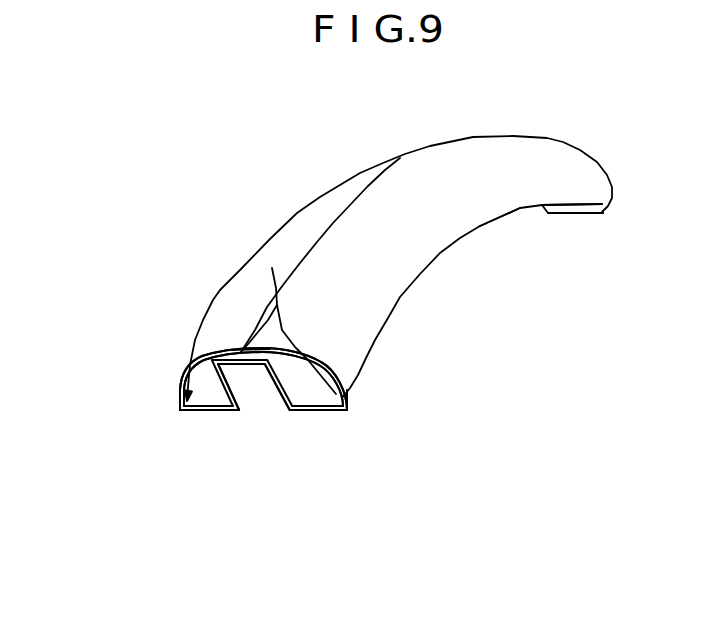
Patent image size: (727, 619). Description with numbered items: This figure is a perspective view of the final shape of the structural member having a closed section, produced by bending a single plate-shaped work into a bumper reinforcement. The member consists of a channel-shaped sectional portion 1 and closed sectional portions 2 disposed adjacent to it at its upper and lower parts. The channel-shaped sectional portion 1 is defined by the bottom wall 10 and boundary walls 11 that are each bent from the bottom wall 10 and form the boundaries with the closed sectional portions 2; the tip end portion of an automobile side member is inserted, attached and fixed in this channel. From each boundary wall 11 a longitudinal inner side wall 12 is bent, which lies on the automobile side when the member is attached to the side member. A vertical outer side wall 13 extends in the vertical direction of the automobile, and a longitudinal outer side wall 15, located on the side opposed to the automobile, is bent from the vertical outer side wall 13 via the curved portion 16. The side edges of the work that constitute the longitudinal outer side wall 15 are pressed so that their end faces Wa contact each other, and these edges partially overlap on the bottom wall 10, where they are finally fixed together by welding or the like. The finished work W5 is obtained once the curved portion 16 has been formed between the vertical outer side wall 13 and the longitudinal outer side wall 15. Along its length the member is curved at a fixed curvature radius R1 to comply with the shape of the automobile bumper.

The channel-shaped sectional portion 1 is at (265, 387).
The closed sectional portion 2 is at (187, 403).
The bottom wall 10 is at (398, 253).
The boundary wall 11 is at (233, 389).
The longitudinal inner side wall 12 is at (211, 411).
The vertical outer side wall 13 is at (183, 399).
The longitudinal outer side wall 15 is at (222, 348).
The curved portion 16 is at (172, 376).
The end face Wa is at (240, 352).
The work W5 is at (525, 217).
The curvature radius R1 is at (501, 220).